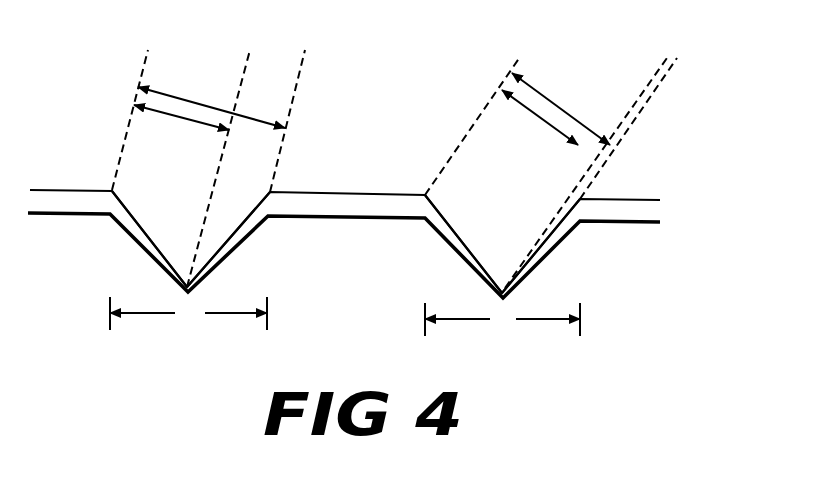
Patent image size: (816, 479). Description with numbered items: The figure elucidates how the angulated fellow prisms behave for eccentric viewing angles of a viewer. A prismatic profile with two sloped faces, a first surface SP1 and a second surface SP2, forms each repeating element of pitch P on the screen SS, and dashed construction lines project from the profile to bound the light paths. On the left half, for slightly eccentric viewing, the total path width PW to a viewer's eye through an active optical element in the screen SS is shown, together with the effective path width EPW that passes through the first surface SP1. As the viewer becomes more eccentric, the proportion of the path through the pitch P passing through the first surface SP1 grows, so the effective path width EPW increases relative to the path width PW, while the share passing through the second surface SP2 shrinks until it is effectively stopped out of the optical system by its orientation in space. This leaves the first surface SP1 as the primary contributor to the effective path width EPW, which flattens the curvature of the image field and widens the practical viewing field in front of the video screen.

The effective path width EPW is at (163, 111).
The path width PW is at (177, 97).
The first prism surface SP1 is at (123, 235).
The second prism surface SP2 is at (247, 242).
The screen SS is at (658, 208).
The pitch P is at (345, 316).